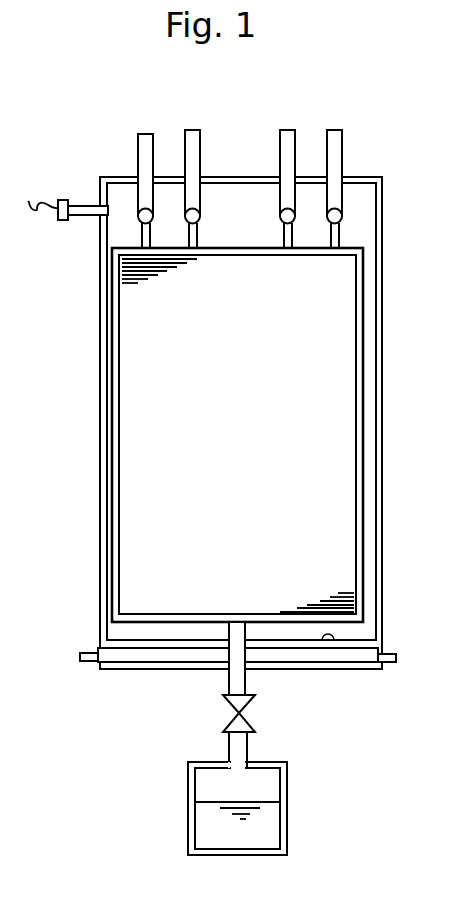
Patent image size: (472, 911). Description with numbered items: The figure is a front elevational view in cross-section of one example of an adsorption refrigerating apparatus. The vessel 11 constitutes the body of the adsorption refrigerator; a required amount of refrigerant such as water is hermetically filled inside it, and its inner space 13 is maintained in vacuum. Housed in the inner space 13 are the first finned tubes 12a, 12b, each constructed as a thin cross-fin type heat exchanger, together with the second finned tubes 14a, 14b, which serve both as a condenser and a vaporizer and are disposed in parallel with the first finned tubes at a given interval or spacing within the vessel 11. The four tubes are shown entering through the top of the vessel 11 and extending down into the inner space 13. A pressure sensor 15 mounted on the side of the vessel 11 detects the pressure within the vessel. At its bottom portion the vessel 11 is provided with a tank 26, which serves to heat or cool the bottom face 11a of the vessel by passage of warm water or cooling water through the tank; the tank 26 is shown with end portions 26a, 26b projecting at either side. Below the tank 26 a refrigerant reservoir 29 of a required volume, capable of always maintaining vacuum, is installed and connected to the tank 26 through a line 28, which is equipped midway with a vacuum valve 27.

The vessel 11 is at (382, 296).
The bottom face of the vessel 11a is at (331, 641).
The first finned tube 12a is at (284, 128).
The first finned tube 12b is at (145, 132).
The inner space 13 is at (368, 455).
The second finned tube 14a is at (338, 128).
The second finned tube 14b is at (193, 128).
The pressure sensor 15 is at (83, 217).
The tank 26 is at (132, 668).
The heater terminal 26a is at (392, 652).
The heater terminal 26b is at (88, 664).
The vacuum valve 27 is at (252, 712).
The line 28 is at (246, 751).
The refrigerant reservoir 29 is at (287, 811).